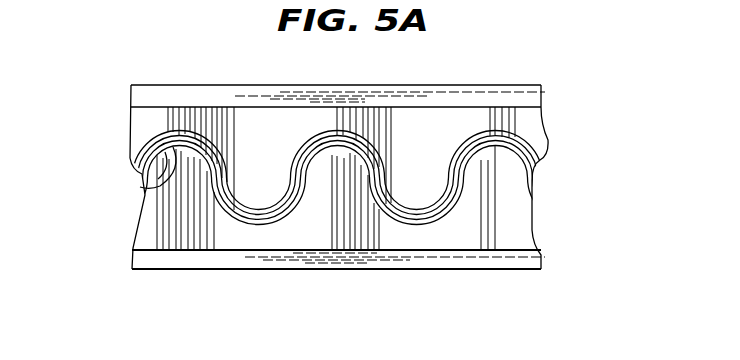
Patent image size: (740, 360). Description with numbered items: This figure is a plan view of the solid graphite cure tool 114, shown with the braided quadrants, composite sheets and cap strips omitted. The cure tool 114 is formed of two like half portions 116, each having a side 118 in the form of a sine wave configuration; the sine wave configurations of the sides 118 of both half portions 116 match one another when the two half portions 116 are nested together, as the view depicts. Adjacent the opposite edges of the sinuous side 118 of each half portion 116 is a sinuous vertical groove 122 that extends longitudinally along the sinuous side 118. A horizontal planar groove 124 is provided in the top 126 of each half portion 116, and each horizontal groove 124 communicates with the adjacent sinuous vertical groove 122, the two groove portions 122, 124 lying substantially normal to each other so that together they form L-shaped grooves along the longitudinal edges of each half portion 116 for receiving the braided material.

The cure tool 114 is at (122, 150).
The half portion 116 is at (556, 68).
The sinuous side 118 is at (150, 185).
The sinuous vertical groove 122 is at (534, 176).
The horizontal planar groove 124 is at (522, 221).
The top 126 is at (536, 98).